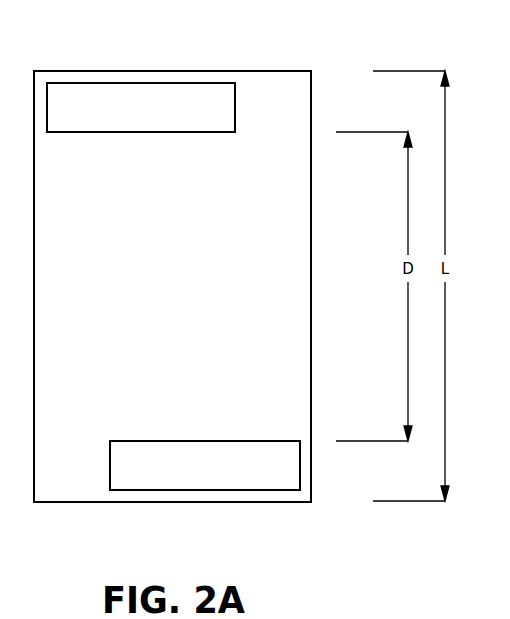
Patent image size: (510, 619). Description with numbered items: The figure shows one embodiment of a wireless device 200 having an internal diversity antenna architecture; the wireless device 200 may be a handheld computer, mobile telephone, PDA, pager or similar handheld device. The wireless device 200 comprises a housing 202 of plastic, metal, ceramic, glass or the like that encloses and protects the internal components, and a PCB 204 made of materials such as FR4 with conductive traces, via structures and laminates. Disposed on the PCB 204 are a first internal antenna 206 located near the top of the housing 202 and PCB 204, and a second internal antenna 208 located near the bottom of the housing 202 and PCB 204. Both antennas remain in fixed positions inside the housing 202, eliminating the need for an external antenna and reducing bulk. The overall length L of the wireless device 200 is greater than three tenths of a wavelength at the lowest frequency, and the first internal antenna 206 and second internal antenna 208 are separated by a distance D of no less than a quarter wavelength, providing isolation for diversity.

The wireless device 200 is at (157, 31).
The housing 202 is at (311, 285).
The PCB 204 is at (158, 264).
The first internal antenna 206 is at (127, 116).
The second internal antenna 208 is at (191, 472).